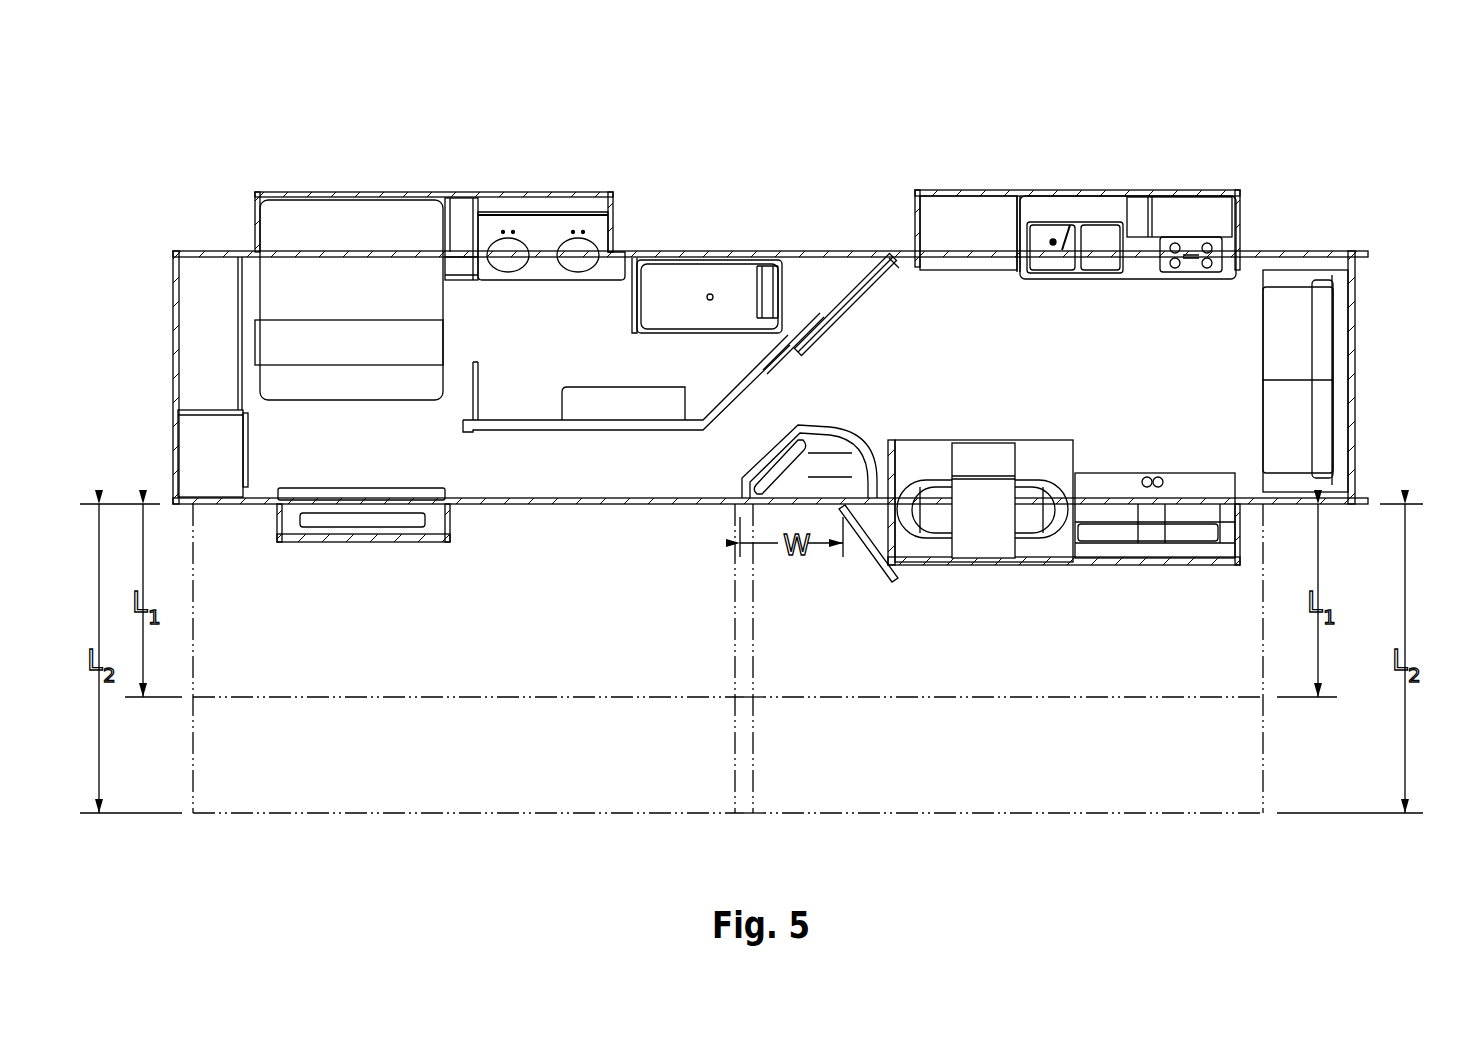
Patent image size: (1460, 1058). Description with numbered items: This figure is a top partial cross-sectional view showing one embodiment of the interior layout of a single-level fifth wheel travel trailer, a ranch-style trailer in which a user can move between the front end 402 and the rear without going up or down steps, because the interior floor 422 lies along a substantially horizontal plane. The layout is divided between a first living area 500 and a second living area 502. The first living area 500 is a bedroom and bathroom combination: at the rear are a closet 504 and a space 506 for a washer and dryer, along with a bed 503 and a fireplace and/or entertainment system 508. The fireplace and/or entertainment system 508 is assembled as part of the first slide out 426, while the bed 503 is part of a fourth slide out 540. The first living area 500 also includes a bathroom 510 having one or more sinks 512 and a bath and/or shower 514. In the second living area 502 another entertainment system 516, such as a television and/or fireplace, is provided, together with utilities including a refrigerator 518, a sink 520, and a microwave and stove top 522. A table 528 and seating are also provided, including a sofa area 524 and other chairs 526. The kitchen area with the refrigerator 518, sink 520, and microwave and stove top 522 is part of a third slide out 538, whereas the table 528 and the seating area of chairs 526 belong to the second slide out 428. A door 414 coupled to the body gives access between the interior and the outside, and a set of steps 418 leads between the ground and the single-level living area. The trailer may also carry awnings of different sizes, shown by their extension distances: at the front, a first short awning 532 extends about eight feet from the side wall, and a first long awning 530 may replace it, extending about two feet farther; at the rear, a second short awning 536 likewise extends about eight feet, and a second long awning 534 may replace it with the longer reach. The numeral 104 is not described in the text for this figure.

The recreational vehicle 104 is at (758, 356).
The front end 402 is at (1367, 310).
The door 414 is at (878, 567).
The set of steps 418 is at (815, 465).
The interior floor 422 is at (1053, 387).
The first slide out 426 is at (382, 550).
The second slide out 428 is at (1040, 580).
The first living area 500 is at (433, 457).
The second living area 502 is at (1242, 300).
The bed 503 is at (265, 282).
The closet 504 is at (200, 290).
The space for a washer and dryer 506 is at (197, 438).
The fireplace and/or entertainment system 508 is at (310, 483).
The bathroom 510 is at (613, 300).
The sinks 512 is at (543, 273).
The bath and/or shower 514 is at (717, 273).
The entertainment system 516 is at (857, 300).
The refrigerator 518 is at (968, 210).
The sink 520 is at (1088, 287).
The microwave and stove top 522 is at (1197, 230).
The sofa area 524 is at (1267, 422).
The chairs 526 is at (1157, 533).
The table 528 is at (953, 437).
The first long awning 530 is at (1065, 815).
The first short awning 532 is at (945, 698).
The second long awning 534 is at (548, 815).
The second short awning 536 is at (330, 698).
The third slide out 538 is at (1110, 175).
The fourth slide out 540 is at (415, 185).